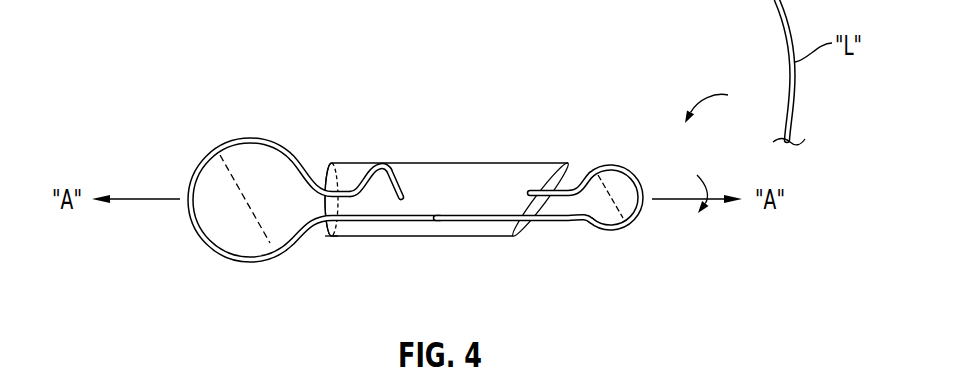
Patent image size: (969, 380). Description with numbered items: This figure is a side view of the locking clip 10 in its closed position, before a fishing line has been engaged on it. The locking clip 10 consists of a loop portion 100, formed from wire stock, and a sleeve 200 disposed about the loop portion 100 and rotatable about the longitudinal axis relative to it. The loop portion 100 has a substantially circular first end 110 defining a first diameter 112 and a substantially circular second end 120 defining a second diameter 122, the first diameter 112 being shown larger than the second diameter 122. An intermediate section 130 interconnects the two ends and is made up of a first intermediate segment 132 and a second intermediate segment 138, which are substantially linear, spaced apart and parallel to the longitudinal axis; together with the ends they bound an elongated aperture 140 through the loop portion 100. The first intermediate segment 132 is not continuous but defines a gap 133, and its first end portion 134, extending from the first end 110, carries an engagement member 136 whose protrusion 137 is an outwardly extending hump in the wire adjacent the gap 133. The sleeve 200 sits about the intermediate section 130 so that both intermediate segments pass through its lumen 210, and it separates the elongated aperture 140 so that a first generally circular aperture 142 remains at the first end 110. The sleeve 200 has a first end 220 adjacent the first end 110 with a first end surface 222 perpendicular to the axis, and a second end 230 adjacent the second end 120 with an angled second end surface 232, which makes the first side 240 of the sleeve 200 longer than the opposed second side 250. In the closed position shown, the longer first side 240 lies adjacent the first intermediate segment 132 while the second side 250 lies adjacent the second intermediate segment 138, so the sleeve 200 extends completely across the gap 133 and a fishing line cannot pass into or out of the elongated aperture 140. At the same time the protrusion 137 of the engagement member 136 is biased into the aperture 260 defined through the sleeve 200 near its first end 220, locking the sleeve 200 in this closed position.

The locking clip 10 is at (411, 185).
The loop portion 100 is at (415, 203).
The first end 110 is at (277, 202).
The first diameter 112 is at (250, 212).
The second end 120 is at (575, 202).
The second diameter 122 is at (616, 193).
The intermediate section 130 is at (506, 234).
The first intermediate segment 132 is at (531, 187).
The gap 133 is at (476, 190).
The first end portion 134 is at (365, 189).
The engagement member 136 is at (397, 202).
The protrusion 137 is at (383, 168).
The second intermediate segment 138 is at (437, 224).
The elongated aperture 140 is at (632, 222).
The first generally circular aperture 142 is at (239, 149).
The sleeve 200 is at (444, 184).
The lumen 210 is at (318, 181).
The first end 220 is at (318, 176).
The first end surface 222 is at (333, 238).
The second end 230 is at (579, 180).
The angled second end surface 232 is at (570, 168).
The first side 240 is at (437, 162).
The second side 250 is at (485, 239).
The aperture 260 is at (380, 150).